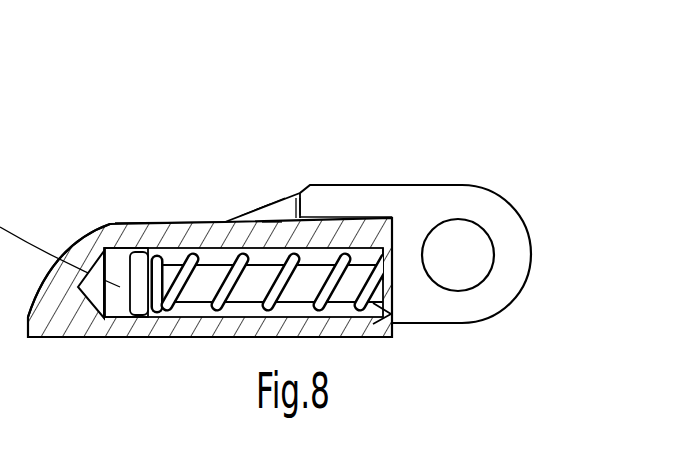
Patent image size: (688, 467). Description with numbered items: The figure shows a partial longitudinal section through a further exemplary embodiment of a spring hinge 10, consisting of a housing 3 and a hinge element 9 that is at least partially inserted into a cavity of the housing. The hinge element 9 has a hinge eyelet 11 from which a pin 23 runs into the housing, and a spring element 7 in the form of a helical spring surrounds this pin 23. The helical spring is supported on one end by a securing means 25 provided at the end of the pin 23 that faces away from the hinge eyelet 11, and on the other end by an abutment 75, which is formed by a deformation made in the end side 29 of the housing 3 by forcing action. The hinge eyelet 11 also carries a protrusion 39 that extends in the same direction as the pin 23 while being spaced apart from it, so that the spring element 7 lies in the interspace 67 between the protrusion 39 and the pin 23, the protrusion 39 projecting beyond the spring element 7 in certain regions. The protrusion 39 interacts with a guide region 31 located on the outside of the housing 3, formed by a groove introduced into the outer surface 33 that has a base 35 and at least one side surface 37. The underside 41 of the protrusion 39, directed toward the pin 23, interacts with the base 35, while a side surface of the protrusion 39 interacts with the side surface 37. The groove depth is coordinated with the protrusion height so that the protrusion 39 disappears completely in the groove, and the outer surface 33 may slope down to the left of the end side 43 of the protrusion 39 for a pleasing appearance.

The housing 3 is at (80, 228).
The outer surface 33 is at (110, 223).
The spring hinge 10 is at (151, 216).
The spring element 7 is at (243, 255).
The base 35 is at (253, 211).
The guide region 31 is at (260, 192).
The side surface 37 is at (272, 219).
The interspace 67 is at (325, 250).
The end side 43 is at (296, 197).
The protrusion 39 is at (336, 210).
The underside 41 is at (351, 214).
The end side 29 is at (388, 226).
The hinge element 9 is at (453, 182).
The hinge eyelet 11 is at (482, 212).
The securing means 25 is at (108, 320).
The pin 23 is at (207, 278).
The abutment 75 is at (393, 320).